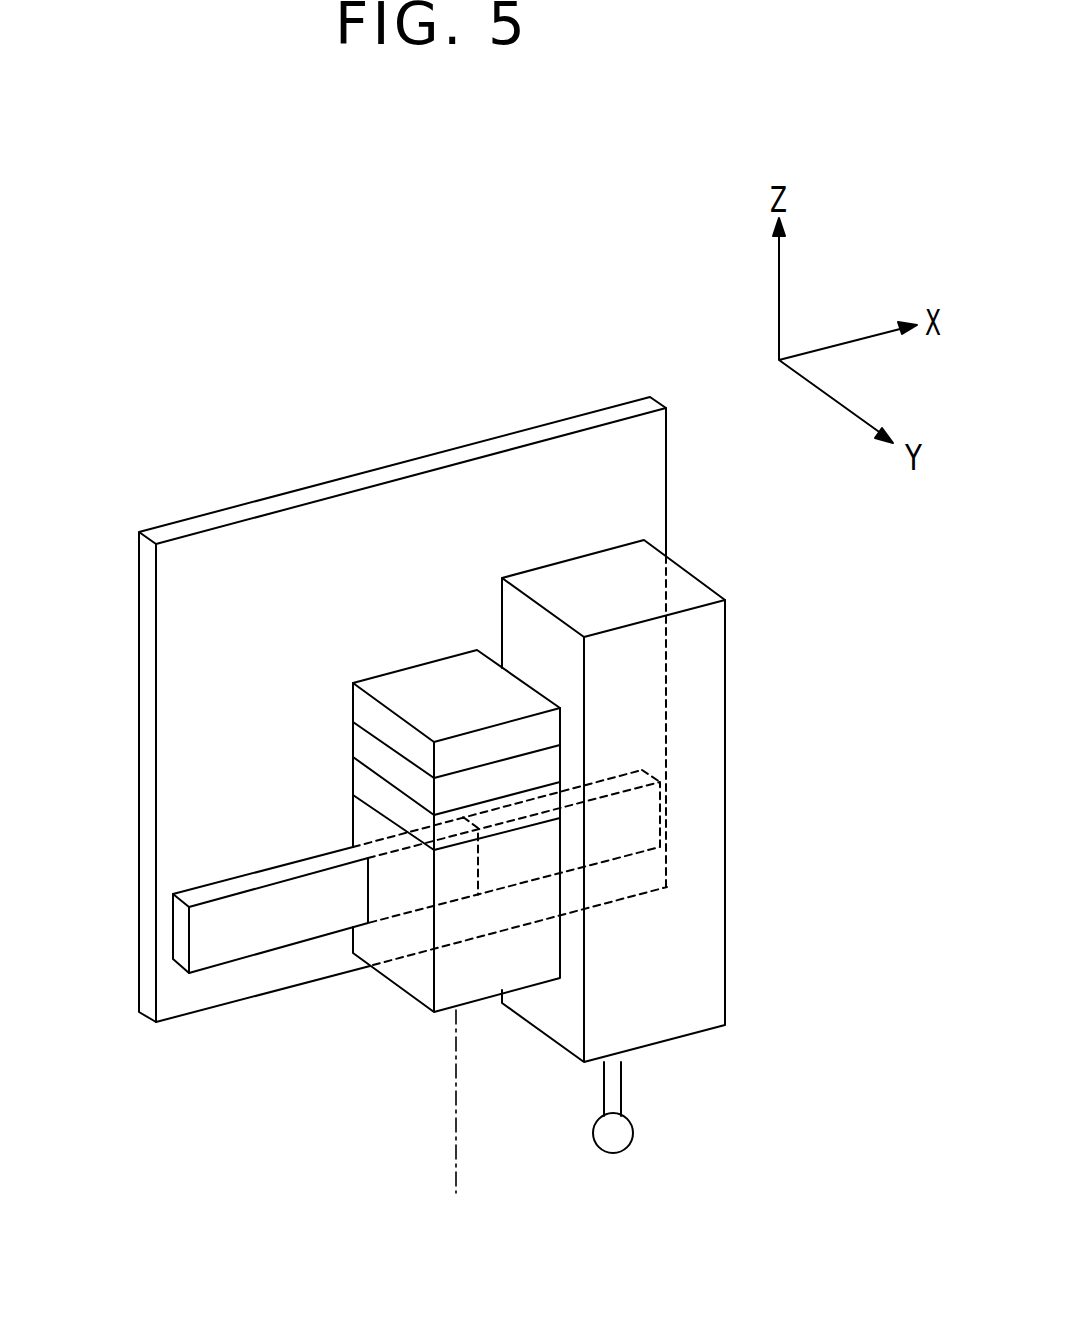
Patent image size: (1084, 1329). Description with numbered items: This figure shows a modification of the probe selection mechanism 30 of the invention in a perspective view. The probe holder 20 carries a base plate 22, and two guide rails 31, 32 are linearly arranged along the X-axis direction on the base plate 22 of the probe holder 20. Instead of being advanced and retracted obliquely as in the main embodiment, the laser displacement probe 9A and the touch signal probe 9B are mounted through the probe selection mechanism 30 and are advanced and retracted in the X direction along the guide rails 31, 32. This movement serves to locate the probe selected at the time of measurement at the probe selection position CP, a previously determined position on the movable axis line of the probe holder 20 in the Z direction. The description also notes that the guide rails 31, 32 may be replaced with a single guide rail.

The probe holder 20 is at (403, 666).
The base plate 22 is at (268, 543).
The probe selection mechanism 30 is at (430, 968).
The guide rail 31 is at (182, 933).
The guide rail 32 is at (660, 812).
The laser displacement probe 9A is at (408, 972).
The touch signal probe 9B is at (697, 1023).
The probe selection position CP is at (456, 1126).